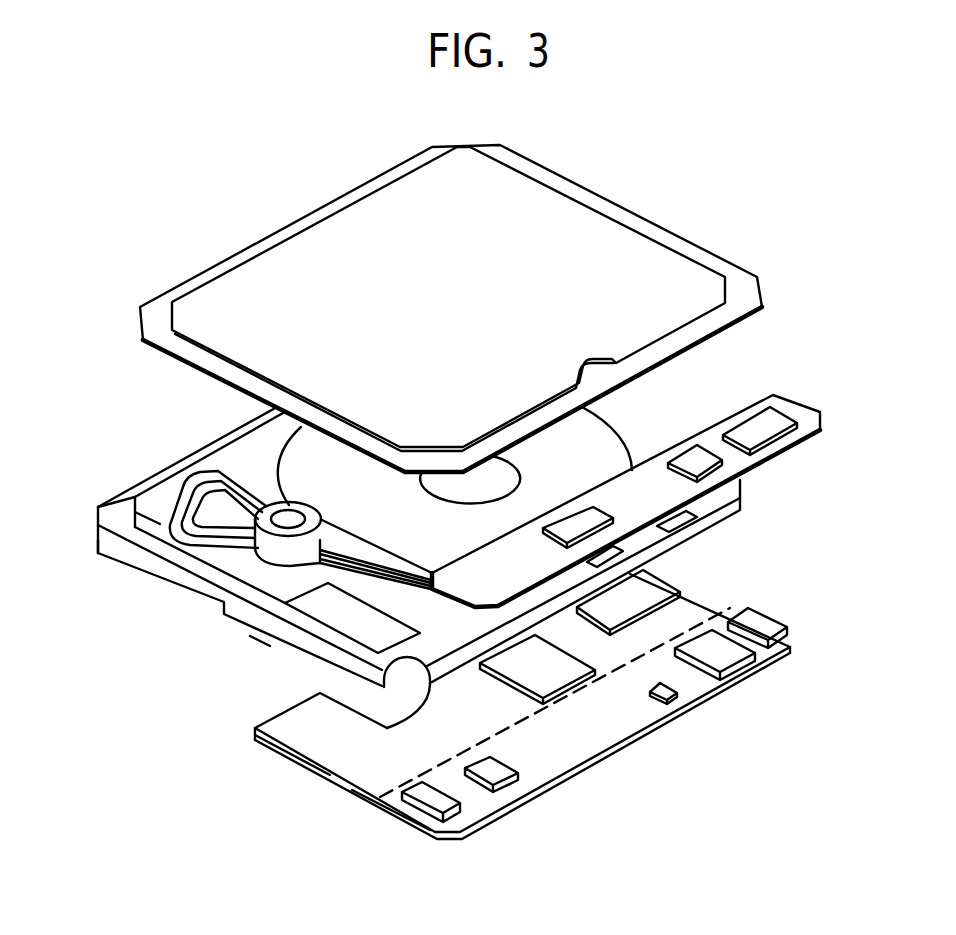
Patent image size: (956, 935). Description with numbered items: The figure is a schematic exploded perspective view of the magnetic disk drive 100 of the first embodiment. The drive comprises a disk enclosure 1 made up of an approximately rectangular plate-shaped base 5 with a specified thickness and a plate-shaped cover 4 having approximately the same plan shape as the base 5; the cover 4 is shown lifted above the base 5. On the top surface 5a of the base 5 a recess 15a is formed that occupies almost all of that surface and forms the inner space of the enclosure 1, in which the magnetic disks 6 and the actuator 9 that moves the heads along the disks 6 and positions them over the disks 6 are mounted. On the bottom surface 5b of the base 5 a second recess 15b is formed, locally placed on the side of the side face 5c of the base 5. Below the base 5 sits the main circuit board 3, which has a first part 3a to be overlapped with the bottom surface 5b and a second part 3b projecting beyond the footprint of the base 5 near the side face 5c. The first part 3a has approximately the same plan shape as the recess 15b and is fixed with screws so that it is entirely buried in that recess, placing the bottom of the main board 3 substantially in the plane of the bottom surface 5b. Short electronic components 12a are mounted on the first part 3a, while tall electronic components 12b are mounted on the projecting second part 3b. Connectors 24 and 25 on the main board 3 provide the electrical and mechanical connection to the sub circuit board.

The magnetic disk drive 100 is at (237, 200).
The disk enclosure 1 is at (822, 243).
The cover 4 is at (688, 276).
The base 5 is at (650, 432).
The top surface of the base 5a is at (118, 507).
The bottom surface of the base 5b is at (126, 565).
The side face of the base 5c is at (452, 660).
The magnetic disk 6 is at (300, 473).
The actuator 9 is at (273, 548).
The recess in the top surface 15a is at (150, 500).
The recess in the bottom surface 15b is at (262, 638).
The short electronic components 12a is at (658, 580).
The tall electronic components 12b is at (776, 440).
The main circuit board 3 is at (707, 610).
The first part of the main circuit board 3a is at (354, 812).
The second part of the main circuit board 3b is at (440, 863).
The connector 24 is at (470, 828).
The connector 25 is at (790, 648).